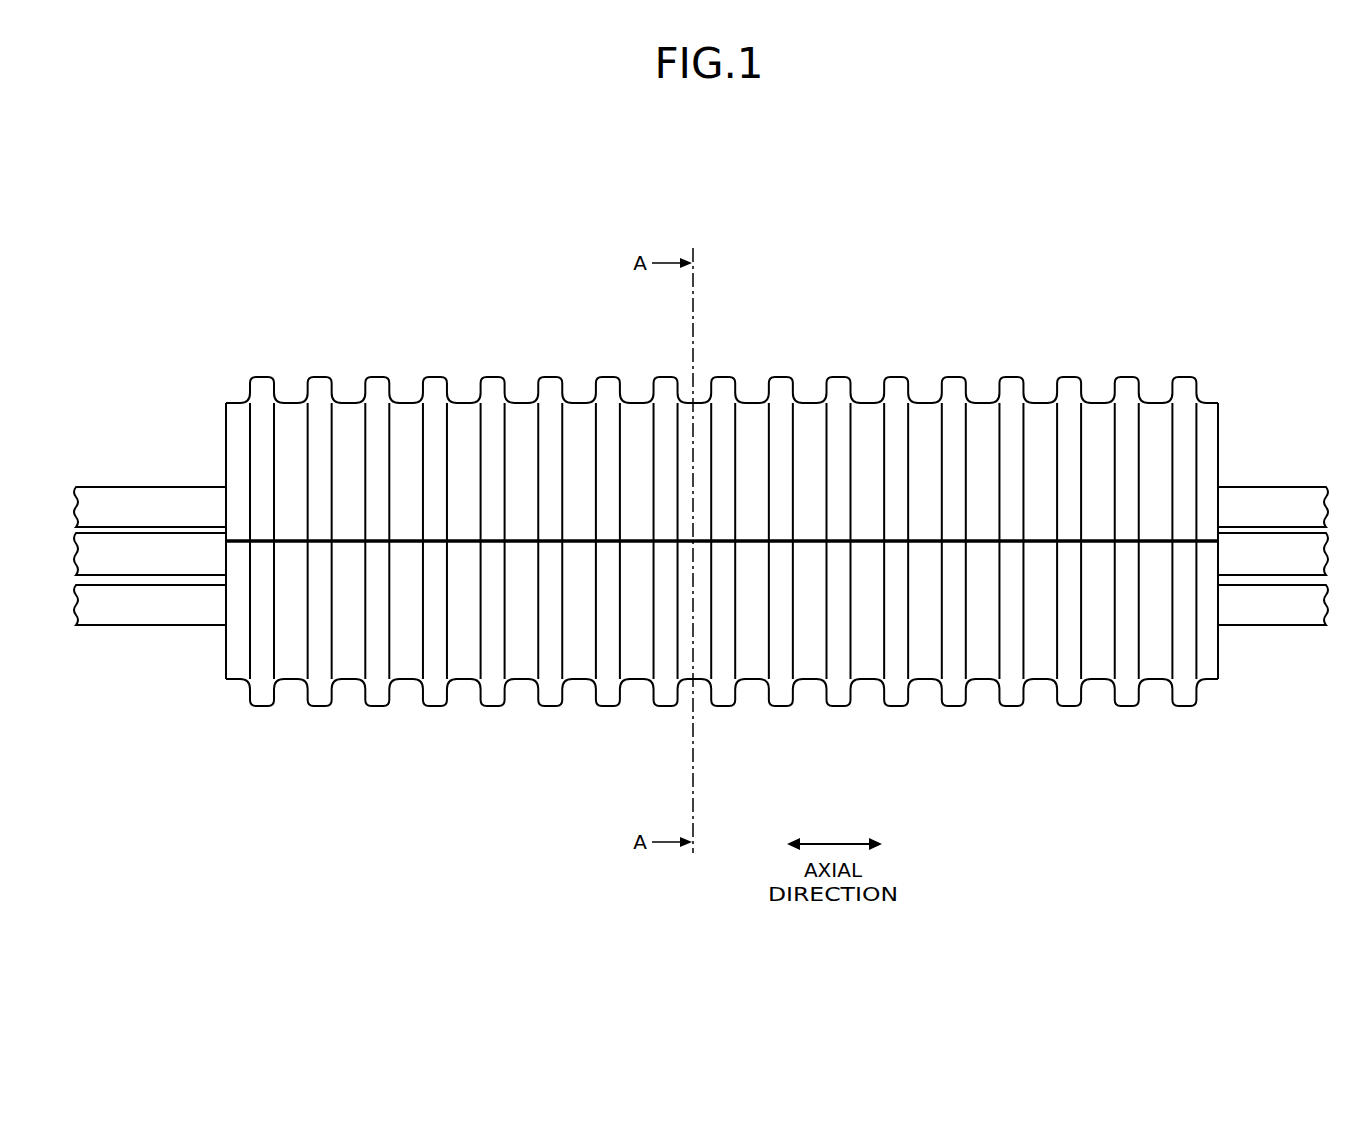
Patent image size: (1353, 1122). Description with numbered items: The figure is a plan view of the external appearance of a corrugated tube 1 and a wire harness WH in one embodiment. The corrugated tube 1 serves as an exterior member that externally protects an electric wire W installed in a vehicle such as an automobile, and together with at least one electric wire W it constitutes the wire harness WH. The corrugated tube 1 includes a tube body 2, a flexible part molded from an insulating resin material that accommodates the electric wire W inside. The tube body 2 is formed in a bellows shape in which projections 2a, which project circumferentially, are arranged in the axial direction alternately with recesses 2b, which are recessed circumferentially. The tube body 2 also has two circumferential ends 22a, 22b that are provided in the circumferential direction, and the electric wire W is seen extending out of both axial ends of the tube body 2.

The wire harness WH is at (888, 164).
The corrugated tube 1 is at (551, 238).
The tube body 2 is at (231, 393).
The projection 2a is at (264, 375).
The recess 2b is at (291, 682).
The circumferential end 22a is at (656, 607).
The circumferential end 22b is at (290, 545).
The electric wire W is at (1266, 590).